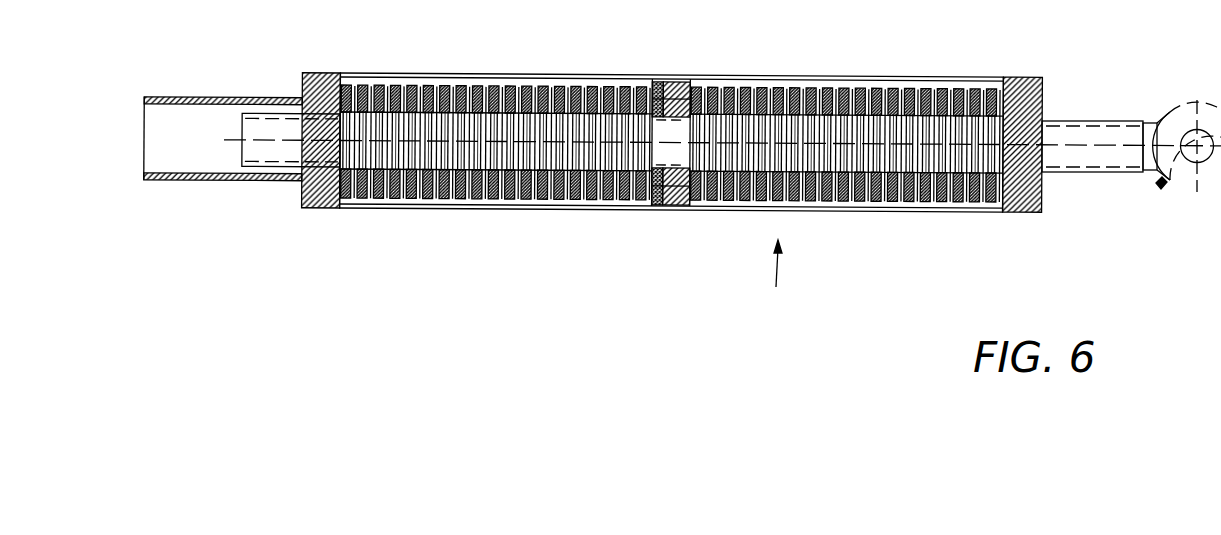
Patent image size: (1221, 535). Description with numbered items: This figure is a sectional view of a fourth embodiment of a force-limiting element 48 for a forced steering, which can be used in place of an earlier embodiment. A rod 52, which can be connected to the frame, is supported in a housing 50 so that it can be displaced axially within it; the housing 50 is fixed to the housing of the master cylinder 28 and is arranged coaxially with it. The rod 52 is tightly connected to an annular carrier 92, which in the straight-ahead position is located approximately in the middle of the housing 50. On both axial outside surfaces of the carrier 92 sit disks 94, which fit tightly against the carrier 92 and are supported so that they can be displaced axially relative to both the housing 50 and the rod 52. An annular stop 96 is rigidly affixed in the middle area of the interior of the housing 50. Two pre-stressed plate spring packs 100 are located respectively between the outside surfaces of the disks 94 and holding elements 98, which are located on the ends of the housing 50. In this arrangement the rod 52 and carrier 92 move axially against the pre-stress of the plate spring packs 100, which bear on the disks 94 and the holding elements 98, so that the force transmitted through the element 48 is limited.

The master cylinder 28 is at (230, 182).
The force-limiting element 48 is at (775, 282).
The housing 50 is at (578, 211).
The rod 52 is at (1100, 160).
The annular carrier 92 is at (692, 85).
The disks 94 is at (698, 212).
The annular stop 96 is at (670, 85).
The holding elements 98 is at (318, 209).
The plate spring packs 100 is at (506, 193).